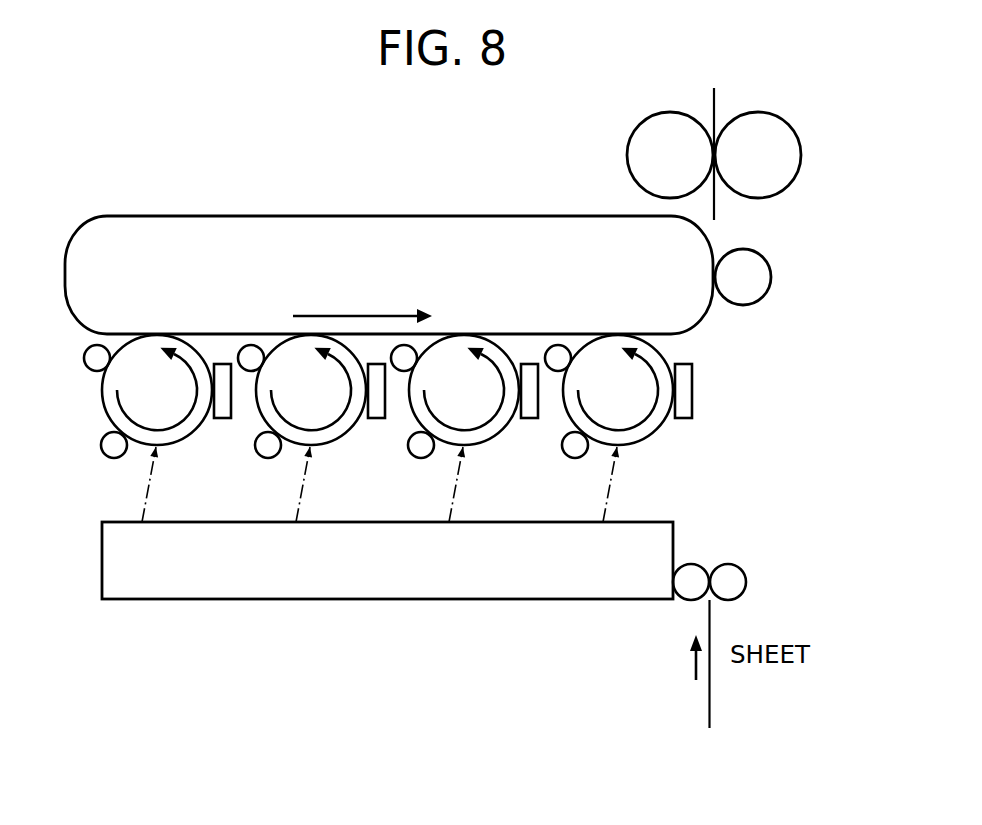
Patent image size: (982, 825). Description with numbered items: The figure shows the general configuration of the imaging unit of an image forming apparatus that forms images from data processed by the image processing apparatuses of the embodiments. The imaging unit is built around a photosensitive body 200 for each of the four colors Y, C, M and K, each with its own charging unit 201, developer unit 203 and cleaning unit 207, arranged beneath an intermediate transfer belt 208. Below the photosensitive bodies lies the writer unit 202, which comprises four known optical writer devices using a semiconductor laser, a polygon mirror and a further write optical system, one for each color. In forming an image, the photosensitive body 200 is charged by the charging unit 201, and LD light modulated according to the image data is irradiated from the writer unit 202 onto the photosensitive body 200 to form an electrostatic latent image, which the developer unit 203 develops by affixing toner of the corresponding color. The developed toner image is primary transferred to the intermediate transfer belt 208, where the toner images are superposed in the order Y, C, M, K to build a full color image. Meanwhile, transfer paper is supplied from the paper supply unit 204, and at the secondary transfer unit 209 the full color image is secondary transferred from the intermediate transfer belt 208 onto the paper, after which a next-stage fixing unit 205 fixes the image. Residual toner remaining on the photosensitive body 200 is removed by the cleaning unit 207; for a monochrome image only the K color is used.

The photosensitive body 200 is at (646, 438).
The charging unit 201 is at (566, 454).
The writer unit 202 is at (102, 555).
The developer unit 203 is at (692, 390).
The paper supply unit 204 is at (748, 549).
The fixing unit 205 is at (616, 127).
The cleaning unit 207 is at (552, 346).
The intermediate transfer belt 208 is at (128, 216).
The secondary transfer unit 209 is at (771, 273).